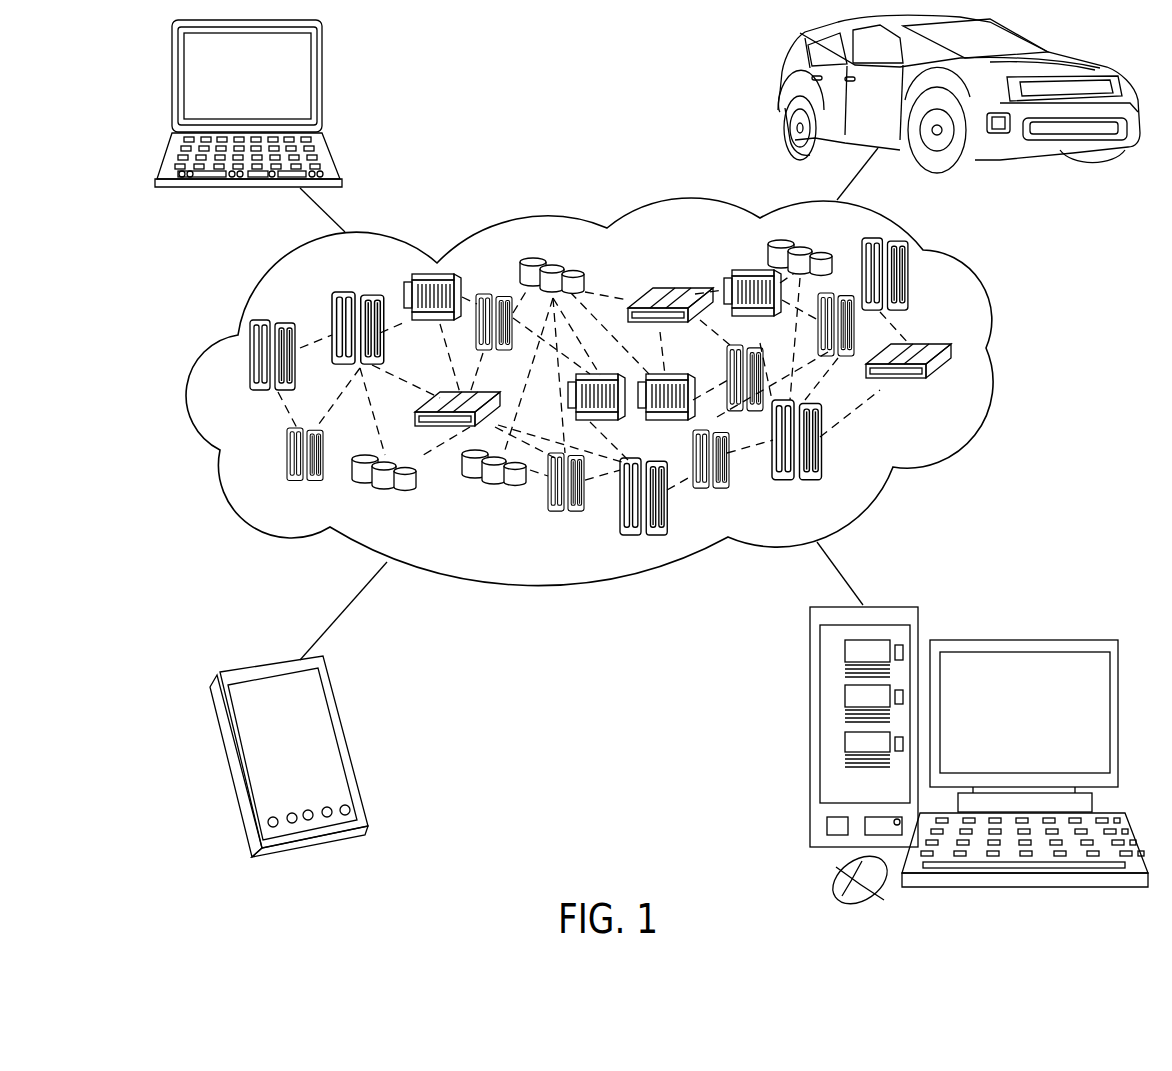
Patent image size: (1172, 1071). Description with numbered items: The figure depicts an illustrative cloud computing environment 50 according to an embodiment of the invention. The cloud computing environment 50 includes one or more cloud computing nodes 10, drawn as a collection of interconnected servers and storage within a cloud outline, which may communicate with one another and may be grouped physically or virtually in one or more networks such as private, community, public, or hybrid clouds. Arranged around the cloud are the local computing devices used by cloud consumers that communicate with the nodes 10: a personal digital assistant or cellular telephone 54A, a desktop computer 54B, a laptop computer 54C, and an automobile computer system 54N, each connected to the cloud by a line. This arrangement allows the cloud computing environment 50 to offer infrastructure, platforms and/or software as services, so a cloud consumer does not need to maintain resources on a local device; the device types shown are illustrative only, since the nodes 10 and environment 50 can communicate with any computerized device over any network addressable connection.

The cloud computing nodes 10 is at (962, 410).
The cloud computing environment 50 is at (1000, 320).
The personal digital assistant (PDA) or cellular telephone 54A is at (352, 737).
The desktop computer 54B is at (1022, 640).
The laptop computer 54C is at (323, 62).
The automobile computer system 54N is at (783, 88).